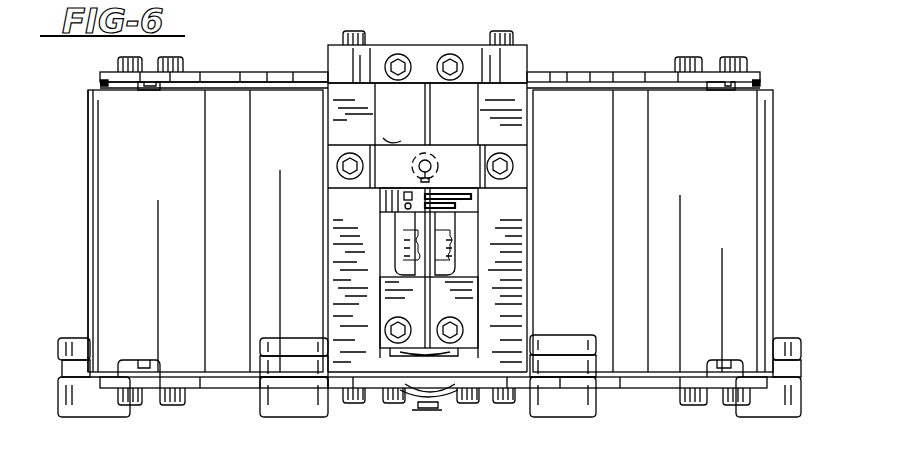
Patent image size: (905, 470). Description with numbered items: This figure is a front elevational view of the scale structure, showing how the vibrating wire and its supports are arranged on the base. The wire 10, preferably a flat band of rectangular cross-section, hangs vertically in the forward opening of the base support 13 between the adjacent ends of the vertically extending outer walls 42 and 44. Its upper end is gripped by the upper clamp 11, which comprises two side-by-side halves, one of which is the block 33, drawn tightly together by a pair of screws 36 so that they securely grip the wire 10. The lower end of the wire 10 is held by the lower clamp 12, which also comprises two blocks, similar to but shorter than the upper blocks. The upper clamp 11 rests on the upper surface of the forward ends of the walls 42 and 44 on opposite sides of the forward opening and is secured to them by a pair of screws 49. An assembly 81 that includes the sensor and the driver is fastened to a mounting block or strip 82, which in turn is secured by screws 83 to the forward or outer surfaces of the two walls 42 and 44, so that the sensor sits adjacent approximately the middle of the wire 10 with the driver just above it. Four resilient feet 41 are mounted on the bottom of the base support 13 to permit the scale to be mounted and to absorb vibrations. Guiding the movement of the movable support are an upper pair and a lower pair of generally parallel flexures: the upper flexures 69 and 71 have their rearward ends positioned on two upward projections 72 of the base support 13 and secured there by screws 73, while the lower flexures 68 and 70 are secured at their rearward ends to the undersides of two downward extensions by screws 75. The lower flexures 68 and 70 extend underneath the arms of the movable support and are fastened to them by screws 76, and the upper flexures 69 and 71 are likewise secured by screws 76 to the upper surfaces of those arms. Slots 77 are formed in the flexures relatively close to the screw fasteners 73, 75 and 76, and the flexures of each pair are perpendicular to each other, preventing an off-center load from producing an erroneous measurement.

The wire 10 is at (418, 125).
The upper clamp 11 is at (530, 49).
The lower clamp 12 is at (480, 319).
The base support 13 is at (86, 217).
The block 33 is at (324, 68).
The screws 36 is at (435, 60).
The resilient feet 41 is at (78, 406).
The outer wall 42 is at (720, 204).
The outer wall 44 is at (158, 164).
The screws 49 is at (347, 38).
The lower flexure 68 is at (205, 388).
The upper flexure 69 is at (242, 78).
The lower flexure 70 is at (649, 388).
The upper flexure 71 is at (626, 72).
The upward projections 72 is at (98, 84).
The screws 73 is at (162, 58).
The screws 75 is at (164, 405).
The screws 76 is at (388, 403).
The slots 77 is at (146, 92).
The assembly 81 is at (326, 183).
The mounting block 82 is at (510, 160).
The screws 83 is at (337, 166).